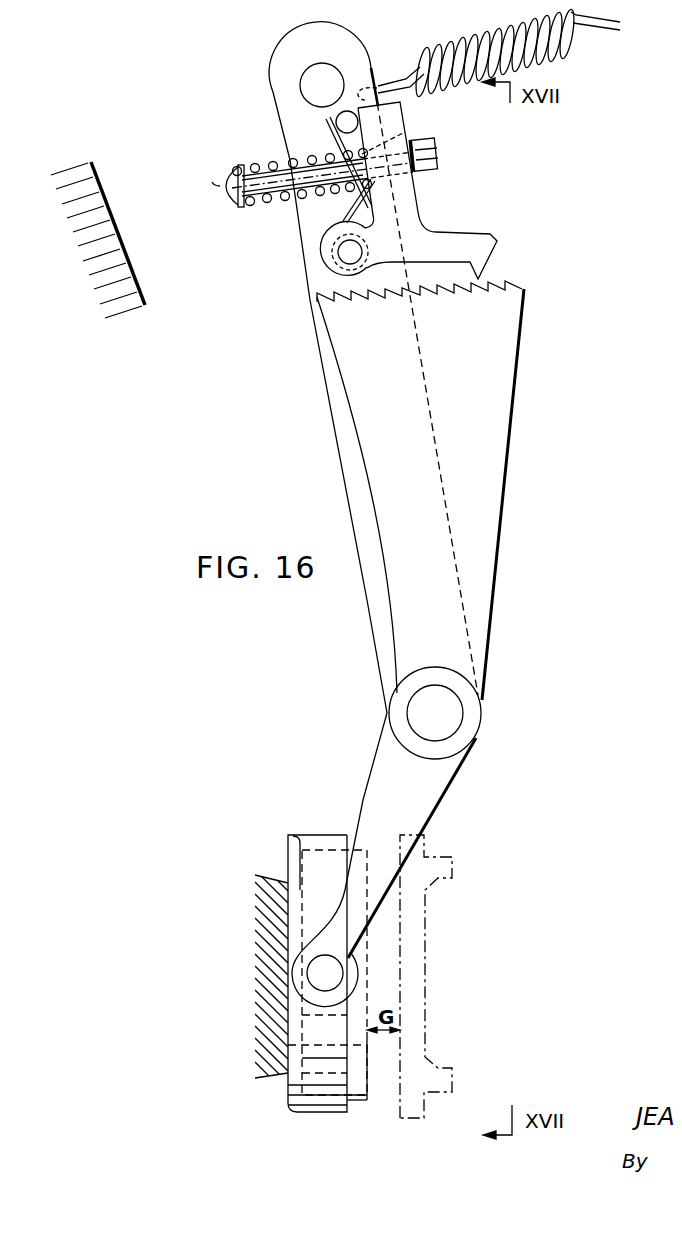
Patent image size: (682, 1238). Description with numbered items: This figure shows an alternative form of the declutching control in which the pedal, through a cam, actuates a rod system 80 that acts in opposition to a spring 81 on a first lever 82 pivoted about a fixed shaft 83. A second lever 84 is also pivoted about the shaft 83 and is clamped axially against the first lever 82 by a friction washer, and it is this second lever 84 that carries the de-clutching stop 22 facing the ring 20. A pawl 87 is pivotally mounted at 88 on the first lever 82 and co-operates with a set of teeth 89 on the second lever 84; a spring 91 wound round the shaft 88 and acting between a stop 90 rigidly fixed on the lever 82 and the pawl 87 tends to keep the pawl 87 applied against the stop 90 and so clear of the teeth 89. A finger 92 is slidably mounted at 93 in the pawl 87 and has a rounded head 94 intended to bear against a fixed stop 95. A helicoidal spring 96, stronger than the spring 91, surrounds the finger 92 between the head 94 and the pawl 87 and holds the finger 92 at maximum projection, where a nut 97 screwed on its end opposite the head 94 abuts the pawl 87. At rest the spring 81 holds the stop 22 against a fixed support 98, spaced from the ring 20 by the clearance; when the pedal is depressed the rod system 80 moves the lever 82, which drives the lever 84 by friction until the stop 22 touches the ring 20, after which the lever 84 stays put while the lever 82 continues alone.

The ring 20 is at (422, 1112).
The de-clutching stop 22 is at (325, 1112).
The rod system 80 is at (322, 85).
The spring 81 is at (484, 39).
The first lever 82 is at (326, 402).
The fixed shaft 83 is at (465, 718).
The second lever 84 is at (445, 601).
The pawl 87 is at (462, 232).
The pawl pivot shaft 88 is at (337, 254).
The set of teeth 89 is at (492, 282).
The stop 90 is at (349, 111).
The spring 91 is at (346, 195).
The finger 92 is at (266, 166).
The slide mounting 93 is at (413, 180).
The rounded head 94 is at (222, 183).
The fixed stop 95 is at (97, 172).
The helicoidal spring 96 is at (238, 170).
The nut 97 is at (420, 140).
The fixed support 98 is at (298, 846).